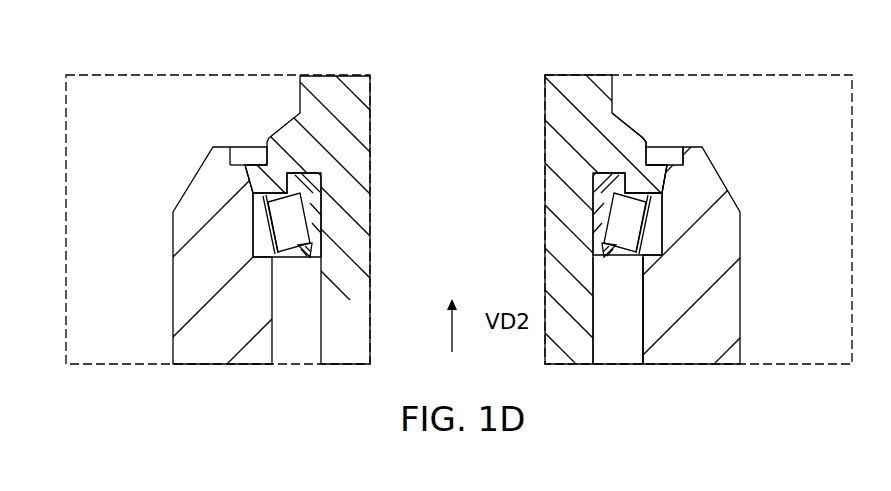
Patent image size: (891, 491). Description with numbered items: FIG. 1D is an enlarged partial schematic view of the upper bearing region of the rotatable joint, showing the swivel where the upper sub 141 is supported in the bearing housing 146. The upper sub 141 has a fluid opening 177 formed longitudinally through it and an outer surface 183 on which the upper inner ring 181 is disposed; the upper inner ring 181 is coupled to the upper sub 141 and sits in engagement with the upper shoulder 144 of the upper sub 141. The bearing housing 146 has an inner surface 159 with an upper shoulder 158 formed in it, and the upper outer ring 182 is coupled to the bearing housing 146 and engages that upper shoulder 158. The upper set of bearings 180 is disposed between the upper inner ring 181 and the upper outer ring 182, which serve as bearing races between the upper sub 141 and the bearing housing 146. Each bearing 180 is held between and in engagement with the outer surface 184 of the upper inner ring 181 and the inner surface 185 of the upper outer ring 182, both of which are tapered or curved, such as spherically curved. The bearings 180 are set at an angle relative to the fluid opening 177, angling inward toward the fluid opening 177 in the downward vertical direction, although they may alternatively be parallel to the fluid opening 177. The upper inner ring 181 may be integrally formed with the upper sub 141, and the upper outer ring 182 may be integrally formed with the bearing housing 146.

The upper sub 141 is at (581, 92).
The upper shoulder 144 is at (628, 137).
The bearing housing 146 is at (210, 200).
The upper shoulder 158 is at (652, 268).
The inner surface 159 is at (643, 337).
The fluid opening 177 is at (469, 82).
The bearings 180 is at (300, 240).
The upper inner ring 181 is at (305, 178).
The upper outer ring 182 is at (260, 222).
The outer surface 183 is at (595, 302).
The outer surface 184 is at (612, 214).
The inner surface 185 is at (662, 199).